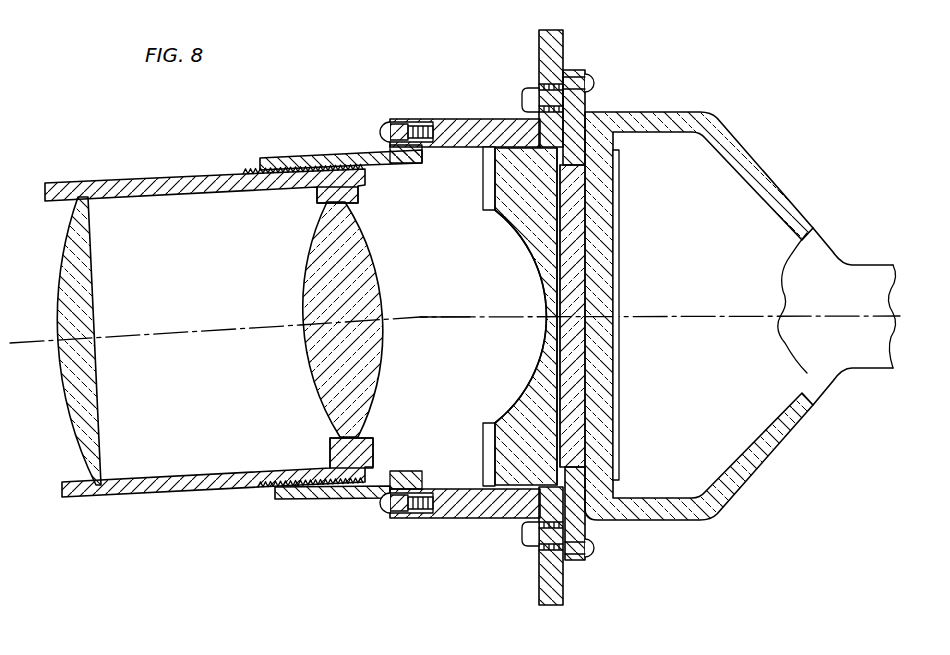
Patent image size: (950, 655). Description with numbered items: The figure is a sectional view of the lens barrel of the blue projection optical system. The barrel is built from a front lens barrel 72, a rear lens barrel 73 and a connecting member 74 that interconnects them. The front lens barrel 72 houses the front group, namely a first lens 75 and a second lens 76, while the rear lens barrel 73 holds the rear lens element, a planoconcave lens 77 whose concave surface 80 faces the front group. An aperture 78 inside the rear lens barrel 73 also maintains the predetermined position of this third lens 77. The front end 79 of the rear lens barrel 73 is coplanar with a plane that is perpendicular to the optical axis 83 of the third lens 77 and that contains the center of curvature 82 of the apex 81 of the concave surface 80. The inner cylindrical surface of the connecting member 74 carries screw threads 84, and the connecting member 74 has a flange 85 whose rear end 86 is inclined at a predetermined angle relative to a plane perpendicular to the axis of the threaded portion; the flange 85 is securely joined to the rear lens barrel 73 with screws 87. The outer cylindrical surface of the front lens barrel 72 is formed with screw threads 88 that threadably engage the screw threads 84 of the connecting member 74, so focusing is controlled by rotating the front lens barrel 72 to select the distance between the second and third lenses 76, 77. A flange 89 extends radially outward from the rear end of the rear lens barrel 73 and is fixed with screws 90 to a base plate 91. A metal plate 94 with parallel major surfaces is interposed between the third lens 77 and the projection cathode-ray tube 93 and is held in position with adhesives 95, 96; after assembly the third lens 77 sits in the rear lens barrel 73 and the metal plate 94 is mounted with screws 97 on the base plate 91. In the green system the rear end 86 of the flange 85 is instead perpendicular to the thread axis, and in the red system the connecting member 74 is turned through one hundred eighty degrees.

The front lens barrel 72 is at (165, 182).
The rear lens barrel 73 is at (453, 120).
The connecting member 74 is at (292, 157).
The first lens 75 is at (62, 318).
The second lens 76 is at (305, 300).
The planoconcave lens 77 is at (520, 215).
The aperture 78 is at (483, 192).
The front end 79 is at (408, 128).
The concave surface 80 is at (542, 262).
The apex 81 is at (547, 325).
The center of curvature 82 is at (412, 318).
The optical axis 83 is at (455, 320).
The screw threads 84 is at (360, 181).
The flange 85 is at (393, 125).
The rear end of the flange 86 is at (410, 126).
The screws 87 is at (380, 132).
The screw threads 88 is at (250, 174).
The flange 89 is at (535, 95).
The screws 90 is at (522, 100).
The base plate 91 is at (563, 45).
The projection cathode-ray tube 93 is at (835, 255).
The metal plate 94 is at (585, 75).
The adhesive 95 is at (562, 165).
The adhesive 96 is at (590, 125).
The screws 97 is at (593, 84).